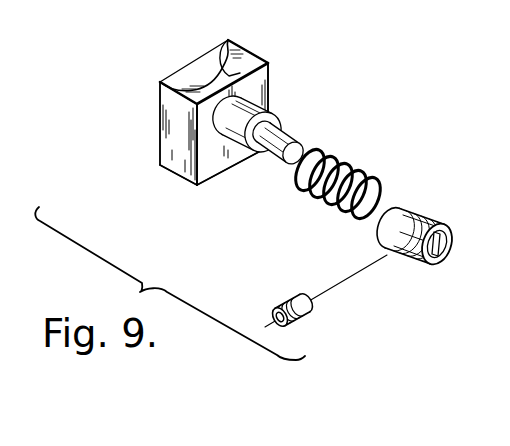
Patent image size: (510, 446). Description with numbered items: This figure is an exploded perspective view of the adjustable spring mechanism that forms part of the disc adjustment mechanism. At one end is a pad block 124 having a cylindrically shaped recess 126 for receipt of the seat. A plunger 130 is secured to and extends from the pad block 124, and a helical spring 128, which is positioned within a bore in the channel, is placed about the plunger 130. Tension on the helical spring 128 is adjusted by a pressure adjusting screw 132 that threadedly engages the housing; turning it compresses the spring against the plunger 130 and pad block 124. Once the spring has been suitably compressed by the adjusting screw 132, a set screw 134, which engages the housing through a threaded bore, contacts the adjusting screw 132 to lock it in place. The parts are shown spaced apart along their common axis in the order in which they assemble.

The pad block 124 is at (256, 60).
The cylindrically shaped recess 126 is at (198, 78).
The plunger 130 is at (282, 137).
The helical spring 128 is at (358, 170).
The pressure adjusting screw 132 is at (424, 207).
The set screw 134 is at (292, 300).